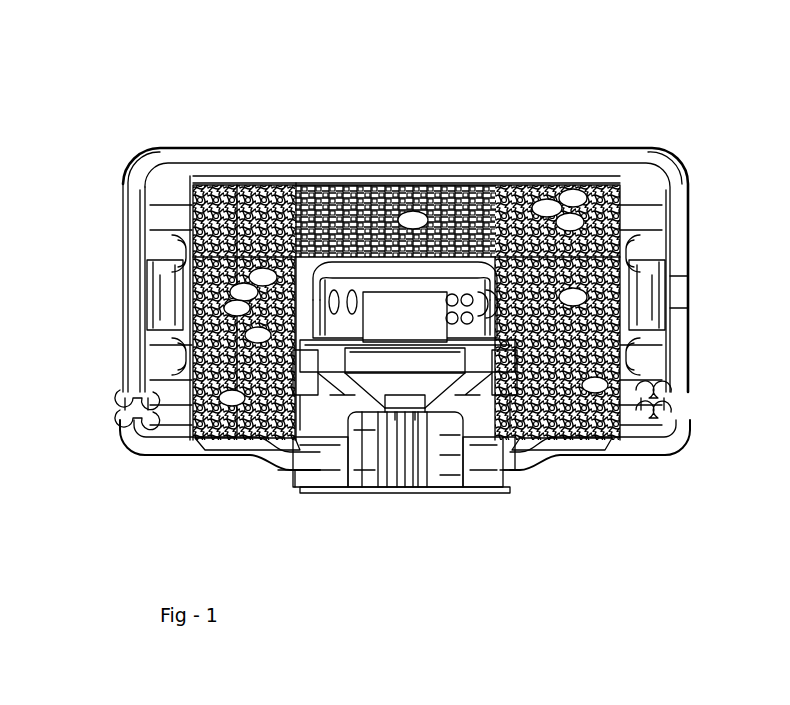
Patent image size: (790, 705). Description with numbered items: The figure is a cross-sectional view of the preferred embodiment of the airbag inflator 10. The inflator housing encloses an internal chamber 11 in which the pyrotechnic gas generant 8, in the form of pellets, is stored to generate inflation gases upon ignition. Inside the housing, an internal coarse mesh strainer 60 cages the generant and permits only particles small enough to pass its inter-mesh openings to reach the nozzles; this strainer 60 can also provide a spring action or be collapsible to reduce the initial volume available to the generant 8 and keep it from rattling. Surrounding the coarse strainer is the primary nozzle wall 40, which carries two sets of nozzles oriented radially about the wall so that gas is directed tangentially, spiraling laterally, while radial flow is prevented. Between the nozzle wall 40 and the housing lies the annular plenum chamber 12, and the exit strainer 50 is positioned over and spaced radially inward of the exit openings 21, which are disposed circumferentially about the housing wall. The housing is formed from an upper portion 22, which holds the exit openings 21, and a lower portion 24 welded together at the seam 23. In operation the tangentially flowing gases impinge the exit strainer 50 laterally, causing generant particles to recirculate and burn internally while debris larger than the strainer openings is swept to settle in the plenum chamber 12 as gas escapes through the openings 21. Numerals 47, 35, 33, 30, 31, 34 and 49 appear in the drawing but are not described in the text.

The airbag inflator 10 is at (453, 135).
The internal chamber 11 is at (410, 175).
The plenum chamber 12 is at (162, 188).
The pyrotechnic gas generant 8 is at (600, 138).
The upper portion 22 is at (672, 176).
The exit openings 21 is at (678, 296).
The lower portion 24 is at (668, 456).
The seam 23 is at (114, 407).
The exit strainer 50 is at (158, 292).
The primary nozzle wall 40 is at (198, 178).
The rib 47 is at (237, 170).
The coarse mesh strainer 60 is at (267, 180).
The device housing 35 is at (342, 300).
The apertures 33 is at (465, 300).
The connector assembly 30 is at (483, 506).
The connector 31 is at (418, 488).
The mounting plate 34 is at (493, 440).
The lower edge 49 is at (228, 438).